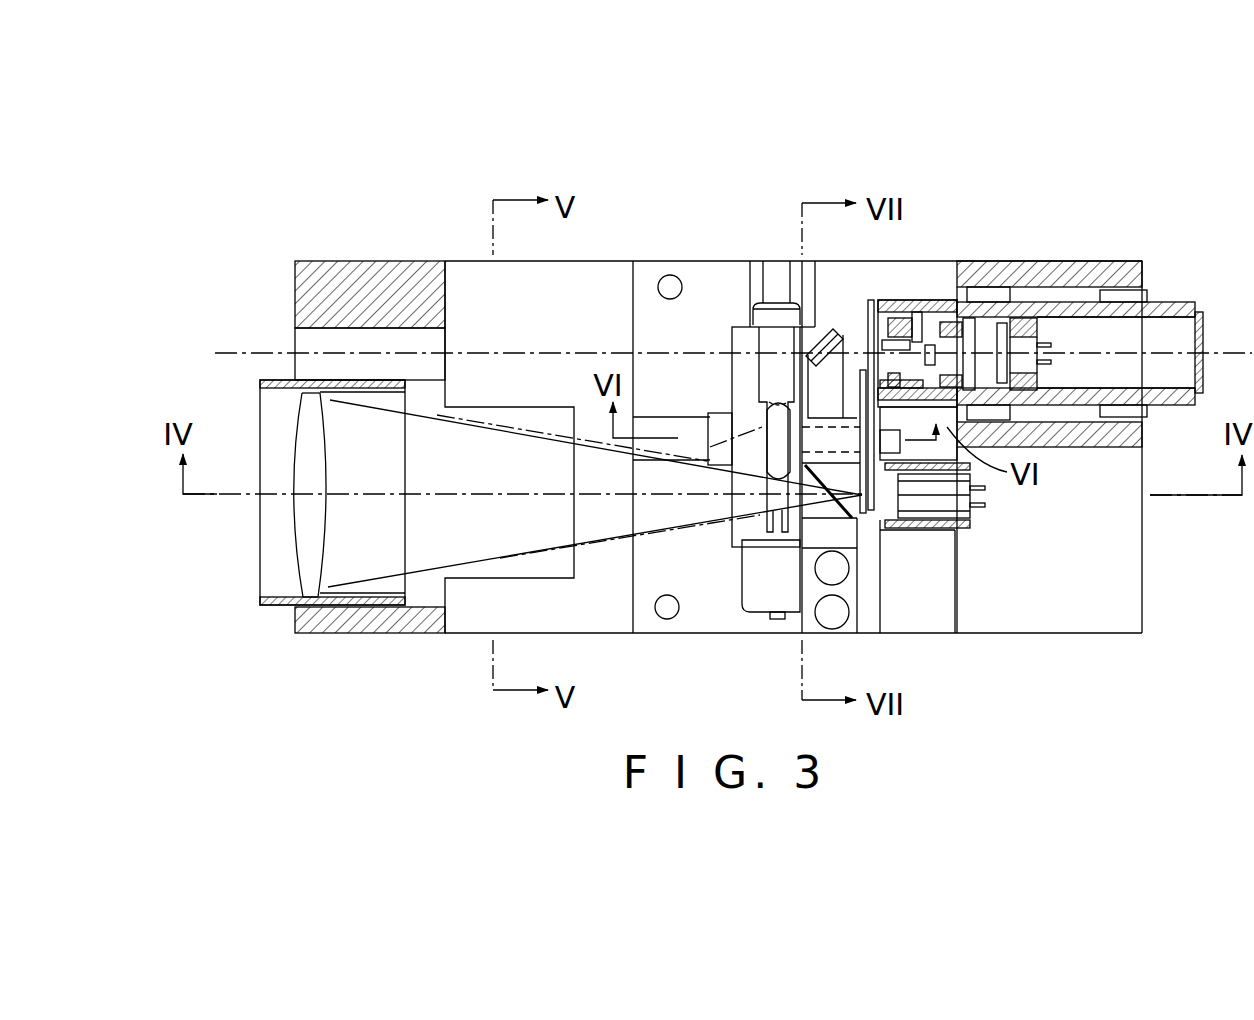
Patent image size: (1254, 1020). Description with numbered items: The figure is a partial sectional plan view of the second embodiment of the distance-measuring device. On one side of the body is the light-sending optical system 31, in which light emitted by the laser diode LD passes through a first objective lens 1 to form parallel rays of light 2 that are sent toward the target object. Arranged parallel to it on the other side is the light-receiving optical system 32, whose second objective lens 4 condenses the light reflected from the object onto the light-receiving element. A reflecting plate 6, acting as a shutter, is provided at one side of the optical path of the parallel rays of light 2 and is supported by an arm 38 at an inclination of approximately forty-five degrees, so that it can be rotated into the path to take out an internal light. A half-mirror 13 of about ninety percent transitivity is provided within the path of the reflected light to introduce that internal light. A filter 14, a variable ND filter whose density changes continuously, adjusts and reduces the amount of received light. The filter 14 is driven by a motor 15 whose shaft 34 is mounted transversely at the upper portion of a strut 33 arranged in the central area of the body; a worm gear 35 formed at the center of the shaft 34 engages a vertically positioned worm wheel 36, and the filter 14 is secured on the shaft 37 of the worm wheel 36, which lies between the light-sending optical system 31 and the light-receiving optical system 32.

The first objective lens 1 is at (940, 340).
The parallel rays of light 2 is at (545, 350).
The second objective lens 4 is at (298, 553).
The reflecting plate 6 is at (825, 338).
The half-mirror 13 is at (830, 515).
The filter 14 is at (862, 513).
The motor 15 is at (762, 597).
The light-sending optical system 31 is at (255, 347).
The light-receiving optical system 32 is at (282, 497).
The strut 33 is at (708, 613).
The shaft 34 is at (760, 376).
The worm gear 35 is at (760, 447).
The worm wheel 36 is at (696, 458).
The shaft of the worm wheel 37 is at (742, 450).
The arm 38 is at (823, 383).
The laser diode LD is at (988, 340).